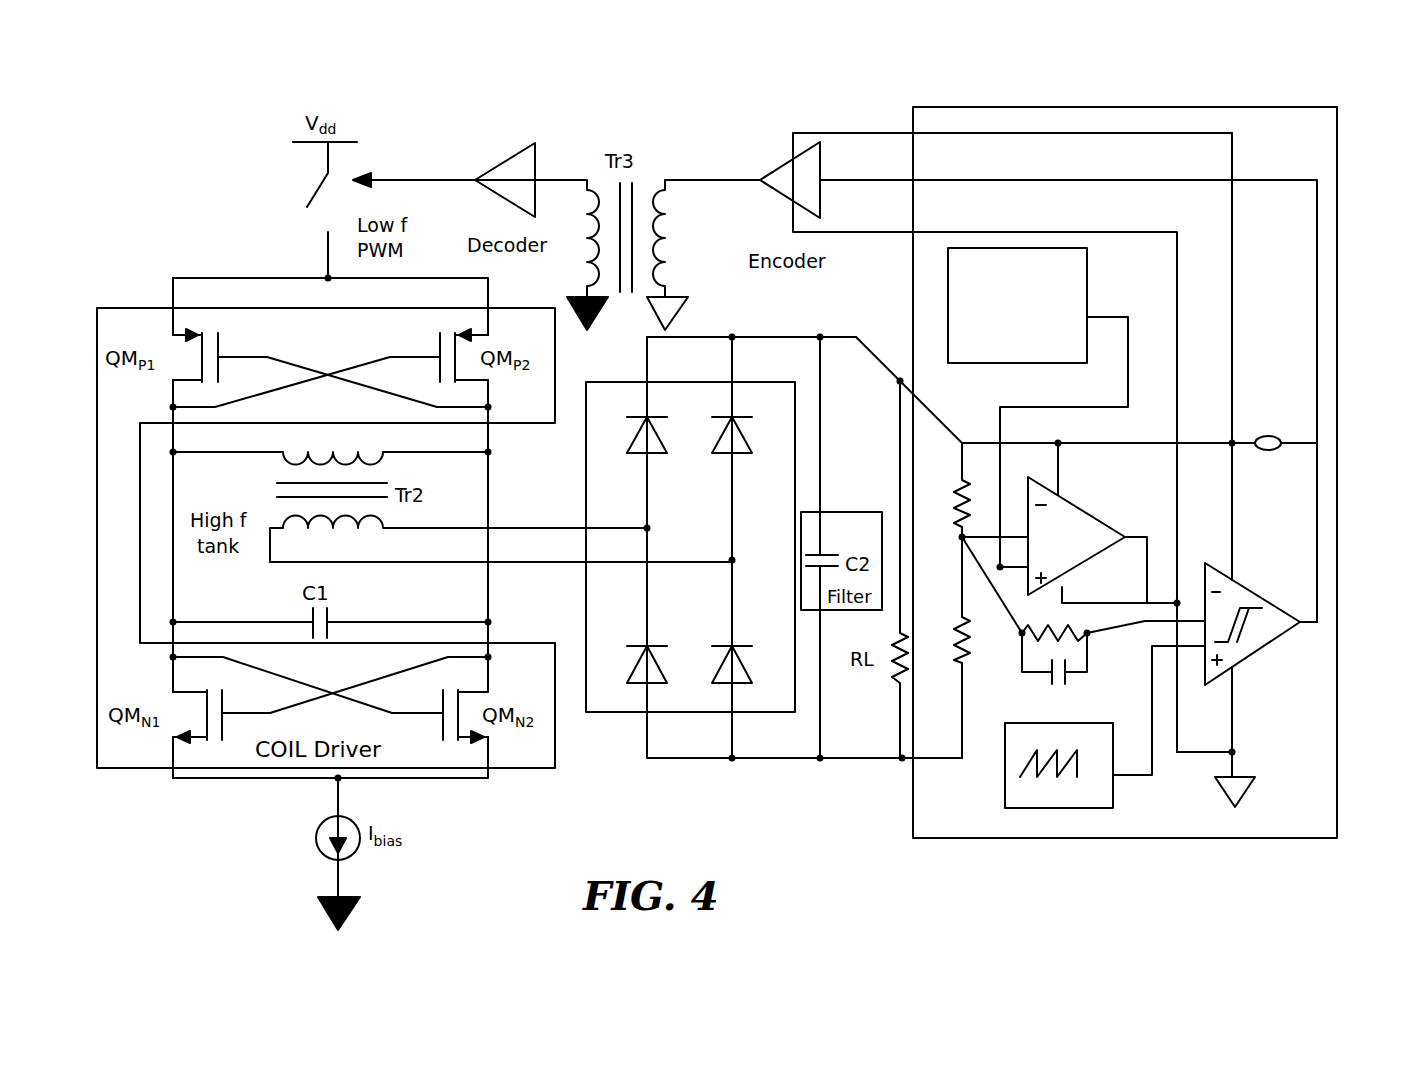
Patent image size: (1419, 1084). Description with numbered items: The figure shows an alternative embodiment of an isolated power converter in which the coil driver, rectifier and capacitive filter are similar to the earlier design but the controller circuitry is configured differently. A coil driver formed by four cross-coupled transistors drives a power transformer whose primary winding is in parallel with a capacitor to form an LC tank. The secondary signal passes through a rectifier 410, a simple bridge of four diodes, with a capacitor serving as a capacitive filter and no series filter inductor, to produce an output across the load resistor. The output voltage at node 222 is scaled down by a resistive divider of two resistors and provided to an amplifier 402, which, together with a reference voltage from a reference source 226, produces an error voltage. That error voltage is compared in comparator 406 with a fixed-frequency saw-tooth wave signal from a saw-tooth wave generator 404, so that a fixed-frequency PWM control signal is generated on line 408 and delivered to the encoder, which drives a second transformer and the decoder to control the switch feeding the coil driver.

The node 222 is at (1317, 443).
The reference source 226 is at (1087, 290).
The amplifier 402 is at (1097, 518).
The saw-tooth wave generator 404 is at (1005, 797).
The comparator 406 is at (1300, 612).
The line 408 is at (1317, 468).
The rectifier 410 is at (590, 714).